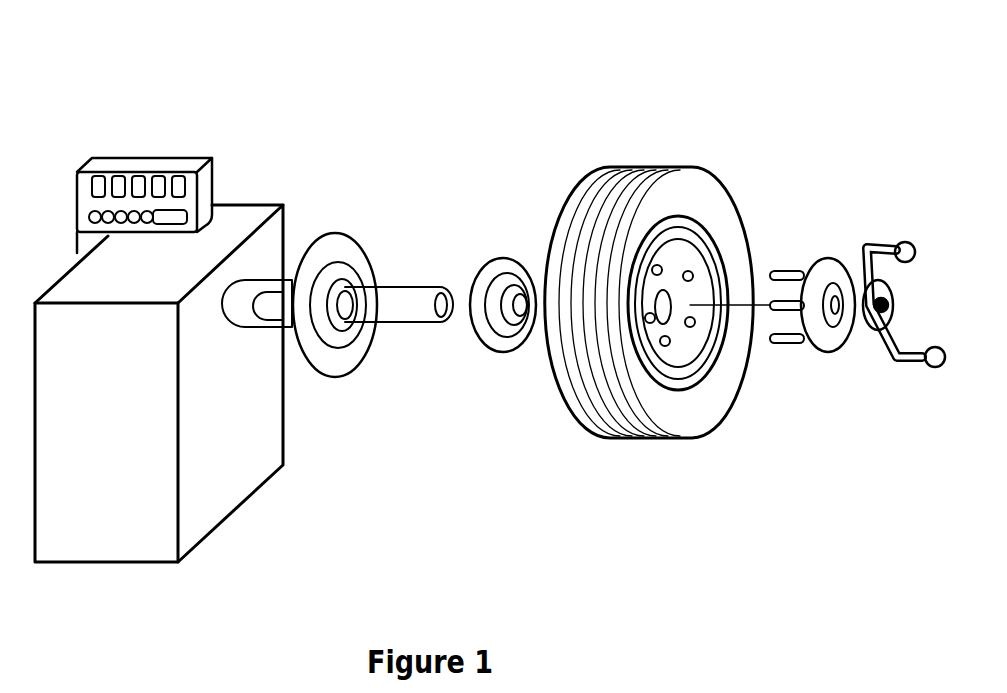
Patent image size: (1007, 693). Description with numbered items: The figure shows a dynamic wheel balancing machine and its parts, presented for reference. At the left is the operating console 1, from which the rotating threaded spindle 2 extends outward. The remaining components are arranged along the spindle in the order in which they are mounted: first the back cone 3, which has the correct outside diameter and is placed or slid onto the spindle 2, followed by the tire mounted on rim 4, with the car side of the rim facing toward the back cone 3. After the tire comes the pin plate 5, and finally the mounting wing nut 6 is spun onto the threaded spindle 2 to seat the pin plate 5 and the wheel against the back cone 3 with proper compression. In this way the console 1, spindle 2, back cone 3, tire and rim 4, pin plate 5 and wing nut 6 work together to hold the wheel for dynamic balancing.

The operating console 1 is at (305, 153).
The rotating threaded spindle 2 is at (403, 268).
The back cone 3 is at (515, 240).
The tire mounted on rim 4 is at (673, 143).
The pin plate 5 is at (832, 233).
The mounting wing nut 6 is at (889, 224).